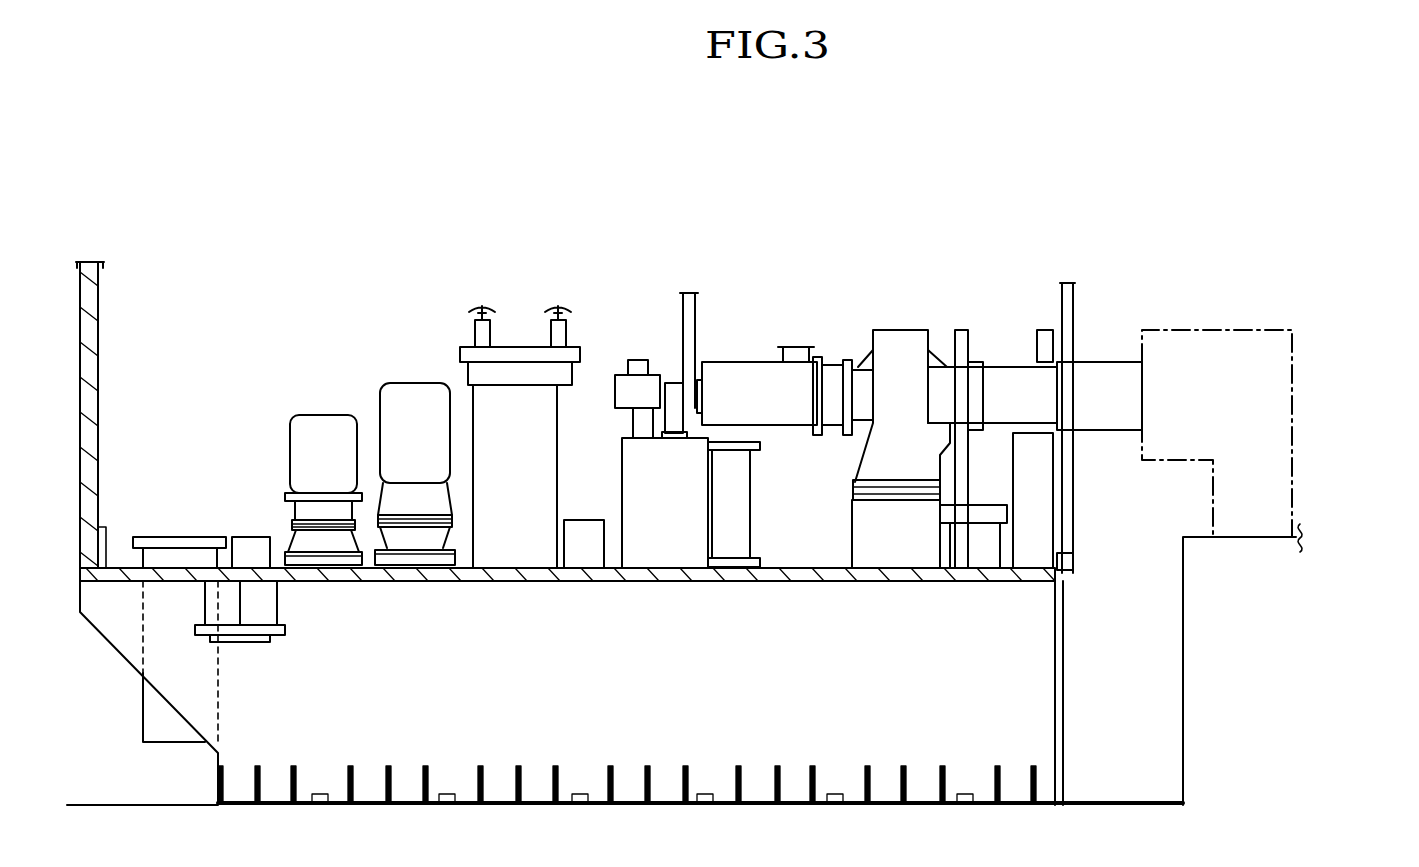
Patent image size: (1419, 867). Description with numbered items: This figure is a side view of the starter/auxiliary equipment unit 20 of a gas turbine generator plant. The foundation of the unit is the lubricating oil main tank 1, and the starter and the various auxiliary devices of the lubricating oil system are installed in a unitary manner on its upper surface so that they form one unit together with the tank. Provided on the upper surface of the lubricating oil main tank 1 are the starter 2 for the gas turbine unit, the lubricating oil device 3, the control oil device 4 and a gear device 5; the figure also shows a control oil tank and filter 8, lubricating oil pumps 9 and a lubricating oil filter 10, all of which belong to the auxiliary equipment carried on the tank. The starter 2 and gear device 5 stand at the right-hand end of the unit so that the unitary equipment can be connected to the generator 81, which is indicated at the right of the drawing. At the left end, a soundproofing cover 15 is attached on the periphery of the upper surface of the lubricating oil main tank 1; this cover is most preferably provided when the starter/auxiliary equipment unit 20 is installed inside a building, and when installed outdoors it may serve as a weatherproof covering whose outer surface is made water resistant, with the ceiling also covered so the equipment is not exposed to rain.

The lubricating oil main tank 1 is at (678, 742).
The starter 2 is at (1107, 362).
The lubricating oil device 3 is at (730, 362).
The control oil device 4 is at (637, 359).
The gear device 5 is at (903, 330).
The control oil tank and filter 8 is at (516, 345).
The lubricating oil pumps 9 is at (390, 394).
The lubricating oil filter 10 is at (206, 537).
The soundproofing cover 15 is at (98, 338).
The starter/auxiliary equipment unit 20 is at (342, 218).
The generator 81 is at (1252, 330).